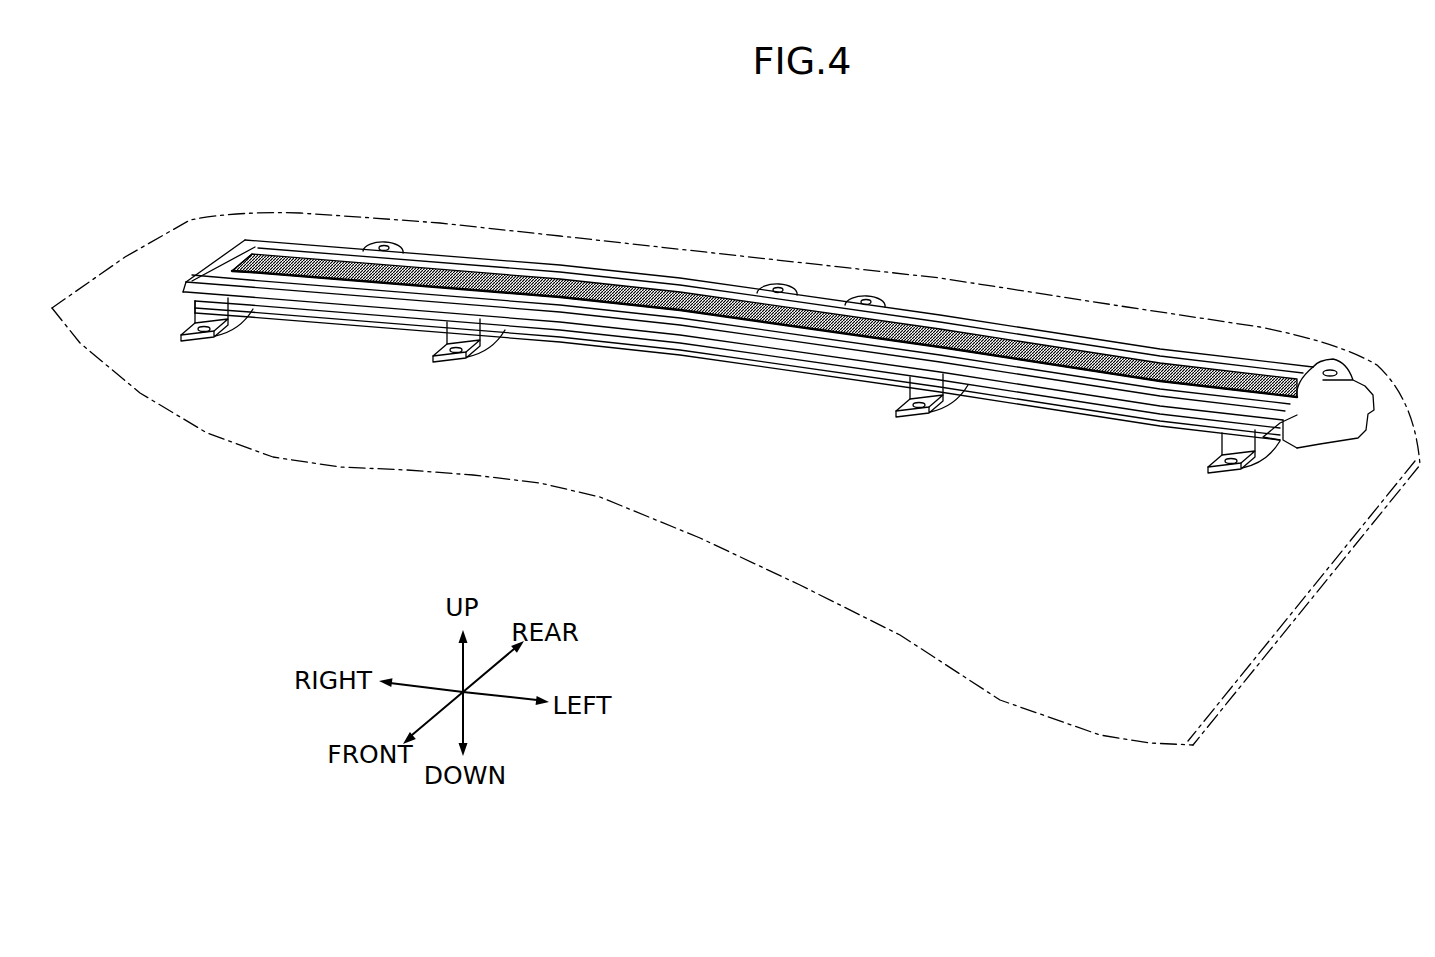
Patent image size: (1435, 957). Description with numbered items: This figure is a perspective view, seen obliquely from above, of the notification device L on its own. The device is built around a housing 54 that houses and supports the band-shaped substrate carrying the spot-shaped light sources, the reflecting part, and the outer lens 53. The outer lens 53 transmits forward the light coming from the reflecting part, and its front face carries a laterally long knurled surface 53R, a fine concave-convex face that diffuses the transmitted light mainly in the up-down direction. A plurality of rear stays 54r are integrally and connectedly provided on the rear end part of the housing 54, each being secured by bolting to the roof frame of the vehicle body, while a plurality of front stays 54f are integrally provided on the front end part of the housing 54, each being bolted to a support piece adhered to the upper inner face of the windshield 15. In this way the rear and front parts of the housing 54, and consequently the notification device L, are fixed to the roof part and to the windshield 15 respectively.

The windshield 15 is at (1297, 616).
The outer lens 53 is at (780, 292).
The laterally long knurled surface 53R is at (669, 305).
The housing 54 is at (739, 374).
The front stays 54f is at (1250, 472).
The rear stays 54r is at (878, 301).
The notification device L is at (558, 387).